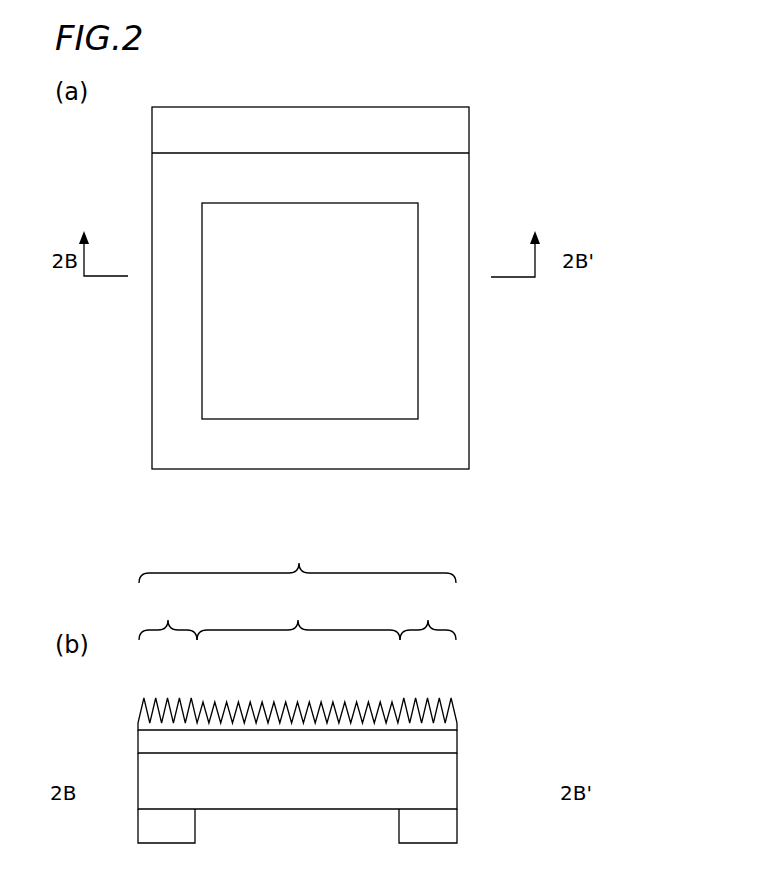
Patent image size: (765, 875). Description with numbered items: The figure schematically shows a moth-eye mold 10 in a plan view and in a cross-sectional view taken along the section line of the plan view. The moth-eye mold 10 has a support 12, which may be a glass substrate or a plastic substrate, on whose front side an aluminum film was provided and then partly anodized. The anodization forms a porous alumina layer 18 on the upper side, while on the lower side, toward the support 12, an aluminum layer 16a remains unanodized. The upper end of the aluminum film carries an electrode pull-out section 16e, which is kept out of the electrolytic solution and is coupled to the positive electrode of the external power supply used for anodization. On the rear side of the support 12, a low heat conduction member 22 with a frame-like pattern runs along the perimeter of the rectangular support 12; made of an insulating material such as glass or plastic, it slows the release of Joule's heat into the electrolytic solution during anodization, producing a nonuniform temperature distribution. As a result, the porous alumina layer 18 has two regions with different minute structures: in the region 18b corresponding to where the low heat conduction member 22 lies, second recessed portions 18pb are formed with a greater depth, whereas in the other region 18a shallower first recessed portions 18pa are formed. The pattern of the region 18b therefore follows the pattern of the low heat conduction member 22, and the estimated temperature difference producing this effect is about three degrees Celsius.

The moth-eye mold 10 is at (631, 147).
The support 12 is at (434, 775).
The aluminum layer 16a is at (450, 745).
The electrode pull-out section 16e is at (458, 129).
The porous alumina layer 18 is at (492, 695).
The other region 18a is at (389, 350).
The region 18b is at (206, 451).
The first recessed portions 18pa is at (358, 710).
The second recessed portions 18pb is at (153, 705).
The low heat conduction member 22 is at (443, 833).